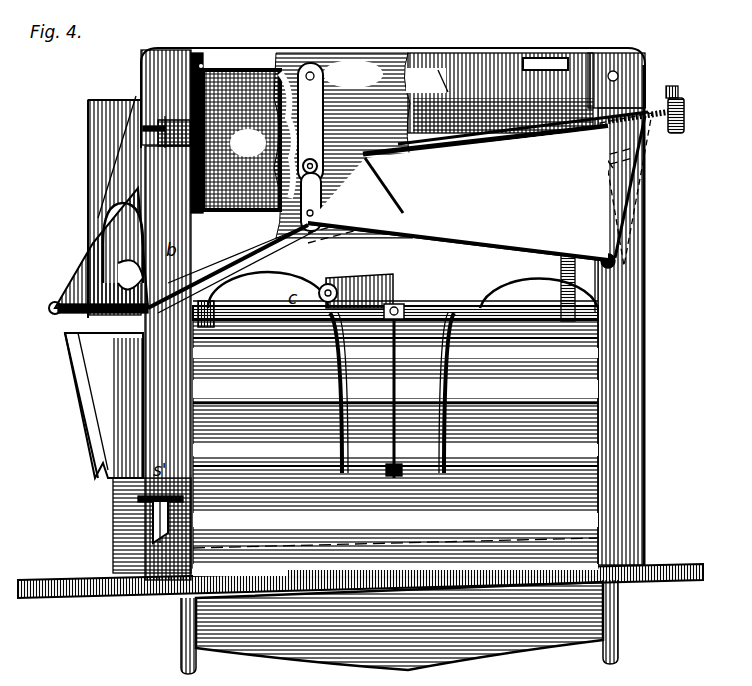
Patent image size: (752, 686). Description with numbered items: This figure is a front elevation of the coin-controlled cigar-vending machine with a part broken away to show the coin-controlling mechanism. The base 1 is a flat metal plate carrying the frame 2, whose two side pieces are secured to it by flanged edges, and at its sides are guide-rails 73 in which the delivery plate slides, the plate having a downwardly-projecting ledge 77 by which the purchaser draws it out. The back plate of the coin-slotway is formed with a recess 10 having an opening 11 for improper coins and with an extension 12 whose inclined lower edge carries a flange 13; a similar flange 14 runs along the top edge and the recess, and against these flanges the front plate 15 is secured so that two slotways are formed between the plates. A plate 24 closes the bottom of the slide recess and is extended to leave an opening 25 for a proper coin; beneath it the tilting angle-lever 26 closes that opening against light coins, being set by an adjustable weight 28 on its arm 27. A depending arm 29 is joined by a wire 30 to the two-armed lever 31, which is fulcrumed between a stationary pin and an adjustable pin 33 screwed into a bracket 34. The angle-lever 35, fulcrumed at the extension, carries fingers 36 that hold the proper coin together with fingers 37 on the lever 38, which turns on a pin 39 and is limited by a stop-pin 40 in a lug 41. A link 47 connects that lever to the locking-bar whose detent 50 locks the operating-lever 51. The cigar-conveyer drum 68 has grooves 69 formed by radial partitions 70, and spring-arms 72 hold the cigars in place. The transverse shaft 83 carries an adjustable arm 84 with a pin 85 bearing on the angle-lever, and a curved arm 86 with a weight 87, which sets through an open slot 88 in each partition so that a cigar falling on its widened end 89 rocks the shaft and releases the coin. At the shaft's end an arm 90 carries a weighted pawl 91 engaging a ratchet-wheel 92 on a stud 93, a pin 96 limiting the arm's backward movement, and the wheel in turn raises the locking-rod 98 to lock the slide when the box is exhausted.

The base 1 is at (690, 560).
The frame 2 is at (620, 333).
The recess 10 is at (241, 140).
The opening 11 is at (192, 55).
The extension 12 is at (168, 363).
The flange 13 is at (230, 269).
The flange 14 is at (445, 46).
The plate 15 is at (343, 145).
The plate 24 is at (455, 140).
The opening 25 is at (405, 140).
The tilting angle-lever 26 is at (472, 150).
The arm 27 is at (676, 88).
The adjustable weight 28 is at (677, 108).
The arm 29 is at (610, 173).
The wire 30 is at (458, 196).
The two-armed lever 31 is at (297, 195).
The adjustable pin 33 is at (310, 160).
The bracket 34 is at (296, 80).
The angle-lever 35 is at (118, 345).
The fingers 36 is at (95, 308).
The fingers 37 is at (80, 278).
The lever 38 is at (88, 212).
The pin 39 is at (118, 200).
The stop-pin 40 is at (150, 120).
The lug 41 is at (168, 112).
The link 47 is at (44, 302).
The detent 50 is at (148, 530).
The operating-lever 51 is at (128, 512).
The cigar-conveyer drum 68 is at (395, 449).
The longitudinal grooves 69 is at (395, 366).
The radial partitions 70 is at (655, 457).
The spring-arms 72 is at (290, 288).
The guide-rails 73 is at (185, 622).
The ledge 77 is at (399, 626).
The transverse shaft 83 is at (425, 298).
The adjustable arm 84 is at (240, 266).
The pin 85 is at (208, 302).
The curved arm 86 is at (408, 380).
The weight 87 is at (347, 262).
The open slot 88 is at (384, 385).
The widened end 89 is at (392, 458).
The arm 90 is at (608, 260).
The weighted pawl 91 is at (553, 160).
The ratchet-wheel 92 is at (534, 224).
The stud 93 is at (541, 210).
The pin 96 is at (580, 216).
The locking-rod 98 is at (549, 156).